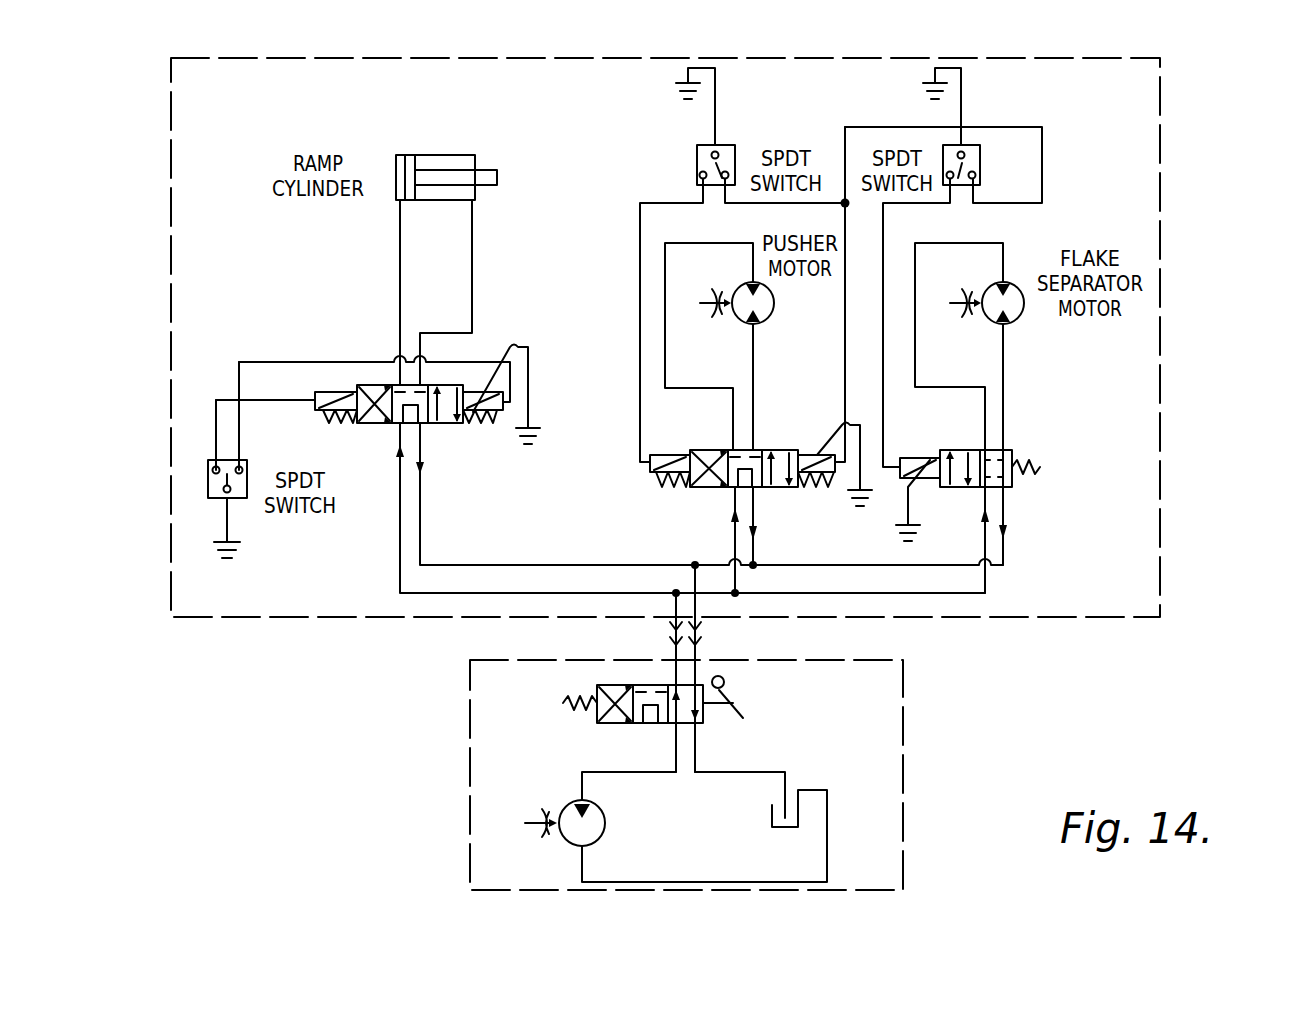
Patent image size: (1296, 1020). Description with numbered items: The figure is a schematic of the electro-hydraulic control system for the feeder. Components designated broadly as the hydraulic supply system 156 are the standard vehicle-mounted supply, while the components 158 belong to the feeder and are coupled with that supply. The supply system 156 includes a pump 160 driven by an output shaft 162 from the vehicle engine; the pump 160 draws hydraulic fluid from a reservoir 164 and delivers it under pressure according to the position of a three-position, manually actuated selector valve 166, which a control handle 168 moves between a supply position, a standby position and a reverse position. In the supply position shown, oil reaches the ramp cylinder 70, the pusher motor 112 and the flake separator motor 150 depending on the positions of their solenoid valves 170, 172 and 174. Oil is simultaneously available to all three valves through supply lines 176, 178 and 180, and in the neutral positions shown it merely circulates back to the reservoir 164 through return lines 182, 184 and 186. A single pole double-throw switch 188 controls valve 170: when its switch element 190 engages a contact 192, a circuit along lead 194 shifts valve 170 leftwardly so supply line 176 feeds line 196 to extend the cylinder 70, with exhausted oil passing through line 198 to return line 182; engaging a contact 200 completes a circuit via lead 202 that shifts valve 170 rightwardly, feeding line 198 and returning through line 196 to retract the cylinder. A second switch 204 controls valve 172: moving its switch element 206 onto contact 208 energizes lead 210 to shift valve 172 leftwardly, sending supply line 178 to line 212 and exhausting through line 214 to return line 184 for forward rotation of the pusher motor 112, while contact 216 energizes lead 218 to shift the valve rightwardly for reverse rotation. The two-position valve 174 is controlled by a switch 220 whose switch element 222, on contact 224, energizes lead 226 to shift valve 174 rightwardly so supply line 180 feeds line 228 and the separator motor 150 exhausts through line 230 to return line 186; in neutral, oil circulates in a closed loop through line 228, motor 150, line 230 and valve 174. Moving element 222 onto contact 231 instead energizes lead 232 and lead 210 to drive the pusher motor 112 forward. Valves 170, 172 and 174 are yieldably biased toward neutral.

The ramp cylinder 70 is at (437, 158).
The pusher motor 112 is at (776, 297).
The flake separator motor 150 is at (1018, 320).
The hydraulic supply system 156 is at (914, 691).
The feeder components 158 is at (1172, 259).
The pump 160 is at (606, 824).
The output shaft 162 is at (536, 821).
The reservoir 164 is at (772, 813).
The selector valve 166 is at (614, 724).
The control handle 168 is at (735, 698).
The solenoid valve 170 is at (379, 425).
The solenoid valve 172 is at (700, 490).
The solenoid valve 174 is at (963, 489).
The supply line 176 is at (400, 560).
The supply line 178 is at (735, 541).
The supply line 180 is at (986, 580).
The return line 182 is at (422, 513).
The return line 184 is at (754, 511).
The return line 186 is at (1004, 512).
The single pole double-throw switch 188 is at (249, 522).
The switch element 190 is at (226, 483).
The contact 192 is at (244, 462).
The lead 194 is at (338, 362).
The line 196 is at (400, 262).
The line 198 is at (472, 262).
The contact 200 is at (214, 466).
The lead 202 is at (262, 400).
The single pole double throw switch 204 is at (688, 151).
The switch element 206 is at (720, 150).
The contact 208 is at (724, 188).
The lead 210 is at (845, 341).
The line 212 is at (666, 366).
The line 214 is at (754, 393).
The contact 216 is at (698, 175).
The lead 218 is at (640, 310).
The single pole double throw switch 220 is at (993, 147).
The switch element 222 is at (970, 150).
The contact 224 is at (952, 190).
The lead 226 is at (884, 395).
The line 228 is at (916, 358).
The line 230 is at (1004, 384).
The contact 231 is at (978, 176).
The lead 232 is at (1044, 149).